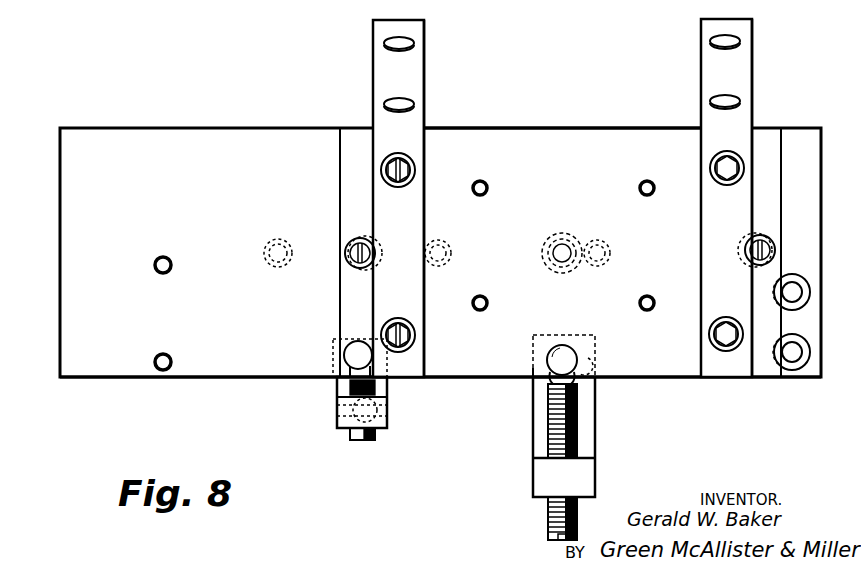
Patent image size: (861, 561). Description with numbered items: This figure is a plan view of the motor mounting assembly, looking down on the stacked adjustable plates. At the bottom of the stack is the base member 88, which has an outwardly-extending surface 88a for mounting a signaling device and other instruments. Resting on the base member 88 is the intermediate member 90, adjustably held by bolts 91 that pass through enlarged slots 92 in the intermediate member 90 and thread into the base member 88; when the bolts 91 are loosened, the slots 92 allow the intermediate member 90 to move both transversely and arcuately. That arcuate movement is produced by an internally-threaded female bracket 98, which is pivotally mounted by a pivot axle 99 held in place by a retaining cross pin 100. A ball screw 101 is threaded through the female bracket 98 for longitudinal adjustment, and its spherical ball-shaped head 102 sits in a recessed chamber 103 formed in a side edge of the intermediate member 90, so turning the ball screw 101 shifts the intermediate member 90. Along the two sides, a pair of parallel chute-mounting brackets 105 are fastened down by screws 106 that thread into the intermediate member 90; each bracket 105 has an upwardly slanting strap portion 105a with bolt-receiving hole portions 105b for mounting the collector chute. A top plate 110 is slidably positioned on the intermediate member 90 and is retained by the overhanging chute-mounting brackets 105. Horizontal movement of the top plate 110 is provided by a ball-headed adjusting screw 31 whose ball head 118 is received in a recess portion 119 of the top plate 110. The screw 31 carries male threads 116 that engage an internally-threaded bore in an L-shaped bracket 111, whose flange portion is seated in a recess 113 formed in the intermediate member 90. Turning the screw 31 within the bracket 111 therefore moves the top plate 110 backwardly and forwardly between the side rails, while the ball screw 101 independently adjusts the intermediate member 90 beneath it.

The ball-headed adjusting screw 31 is at (548, 425).
The base member 88 is at (282, 128).
The outwardly-extending surface 88a is at (165, 385).
The intermediate member 90 is at (355, 137).
The bolts 91 is at (349, 262).
The enlarged slots 92 is at (362, 238).
The female bracket 98 is at (387, 420).
The pivot axle 99 is at (378, 405).
The retaining cross pin 100 is at (346, 405).
The ball screw 101 is at (364, 441).
The ball-shaped head 102 is at (350, 366).
The recessed chamber 103 is at (350, 352).
The chute-mounting brackets 105 is at (418, 213).
The upwardly slanting strap portions 105a is at (425, 68).
The bolt-receiving hole portions 105b is at (405, 43).
The screws 106 is at (414, 165).
The top plate 110 is at (555, 128).
The L-shaped bracket 111 is at (590, 440).
The recess 113 is at (591, 381).
The male threads 116 is at (548, 511).
The ball head 118 is at (566, 345).
The recess portion 119 is at (533, 372).